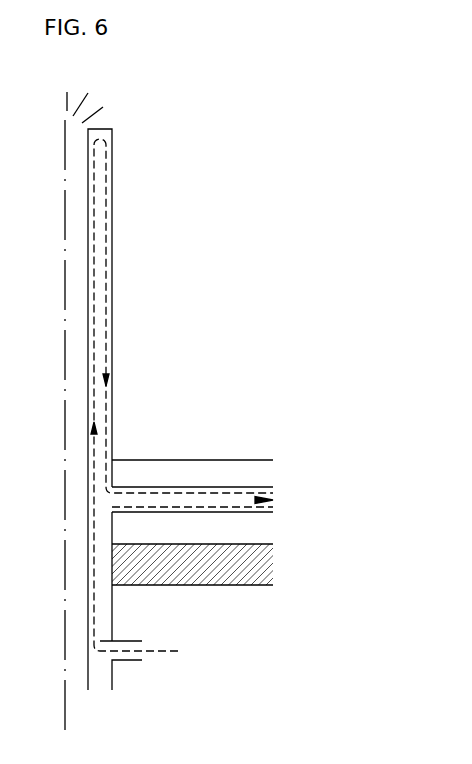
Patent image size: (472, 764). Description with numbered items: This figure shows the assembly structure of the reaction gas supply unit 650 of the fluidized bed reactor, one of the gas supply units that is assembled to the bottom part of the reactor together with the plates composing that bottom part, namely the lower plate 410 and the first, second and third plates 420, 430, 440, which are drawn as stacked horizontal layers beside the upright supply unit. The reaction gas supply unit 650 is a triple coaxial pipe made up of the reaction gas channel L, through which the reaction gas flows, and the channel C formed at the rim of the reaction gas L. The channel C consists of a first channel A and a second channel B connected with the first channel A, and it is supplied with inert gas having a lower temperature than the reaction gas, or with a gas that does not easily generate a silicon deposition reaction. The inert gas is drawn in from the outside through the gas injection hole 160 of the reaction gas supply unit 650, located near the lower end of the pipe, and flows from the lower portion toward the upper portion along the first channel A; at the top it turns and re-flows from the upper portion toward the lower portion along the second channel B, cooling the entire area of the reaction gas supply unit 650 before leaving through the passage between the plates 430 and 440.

The reaction gas supply unit 650 is at (77, 683).
The reaction gas channel L is at (77, 208).
The first channel A is at (97, 237).
The second channel B is at (108, 222).
The channel C is at (193, 222).
The third plate 440 is at (257, 468).
The second plate 430 is at (258, 490).
The first plate 420 is at (257, 530).
The lower plate 410 is at (257, 567).
The gas injection hole 160 is at (135, 658).